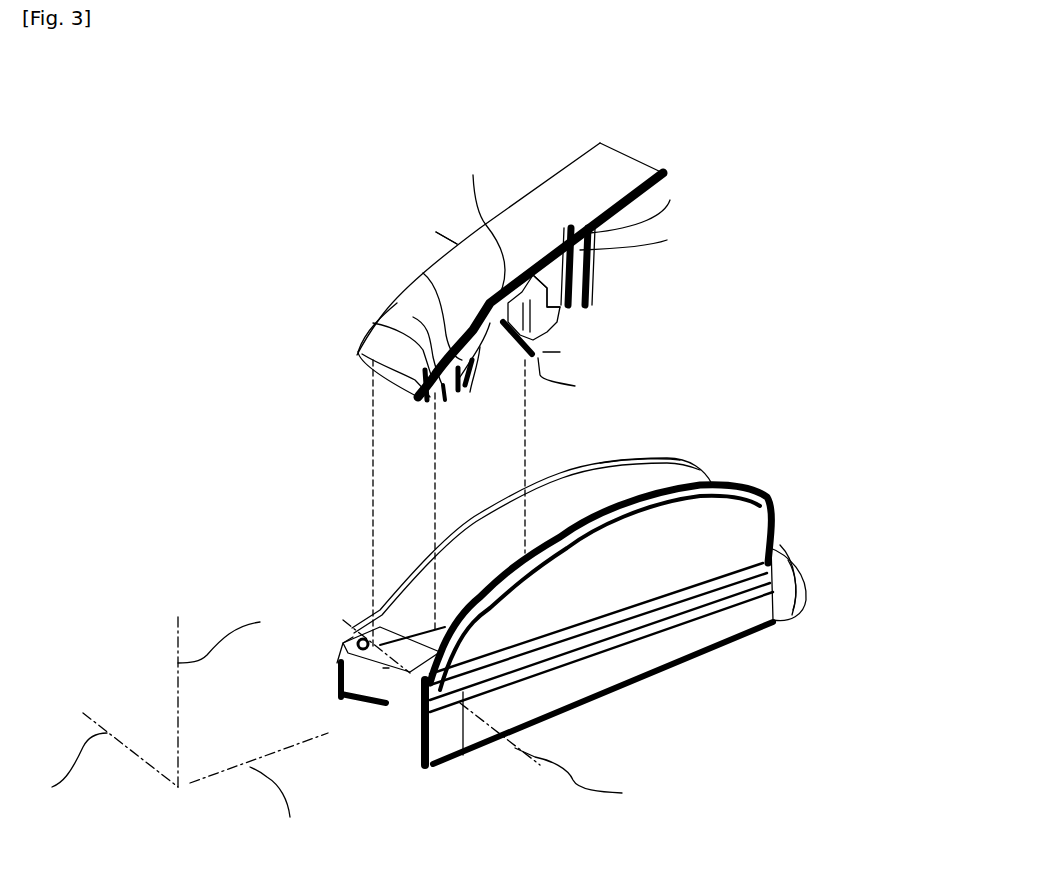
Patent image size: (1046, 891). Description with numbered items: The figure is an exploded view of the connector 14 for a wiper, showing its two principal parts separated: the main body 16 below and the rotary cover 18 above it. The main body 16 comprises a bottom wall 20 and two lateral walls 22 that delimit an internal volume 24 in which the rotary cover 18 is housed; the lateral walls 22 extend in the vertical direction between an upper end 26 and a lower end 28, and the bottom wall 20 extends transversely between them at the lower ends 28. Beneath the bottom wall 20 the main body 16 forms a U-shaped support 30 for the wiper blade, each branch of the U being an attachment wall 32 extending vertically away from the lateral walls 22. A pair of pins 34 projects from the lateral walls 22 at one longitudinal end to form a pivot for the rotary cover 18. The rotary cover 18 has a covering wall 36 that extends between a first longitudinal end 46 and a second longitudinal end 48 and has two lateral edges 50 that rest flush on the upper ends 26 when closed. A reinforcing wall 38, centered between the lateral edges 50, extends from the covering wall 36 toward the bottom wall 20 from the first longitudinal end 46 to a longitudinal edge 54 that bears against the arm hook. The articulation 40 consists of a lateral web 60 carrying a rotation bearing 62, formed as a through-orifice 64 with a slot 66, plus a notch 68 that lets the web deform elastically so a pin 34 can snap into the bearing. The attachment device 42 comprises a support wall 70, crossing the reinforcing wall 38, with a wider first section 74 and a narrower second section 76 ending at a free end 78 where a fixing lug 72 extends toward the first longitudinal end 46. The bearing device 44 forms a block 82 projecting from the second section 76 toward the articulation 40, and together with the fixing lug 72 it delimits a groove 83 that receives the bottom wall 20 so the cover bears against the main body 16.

The connector 14 is at (158, 386).
The main body 16 is at (750, 608).
The rotary cover 18 is at (571, 166).
The bottom wall 20 is at (388, 668).
The lateral walls 22 is at (675, 523).
The internal volume 24 is at (548, 505).
The upper end 26 is at (745, 487).
The lower end 28 is at (772, 600).
The support 30 is at (383, 668).
The attachment wall 32 is at (345, 650).
The pair of pins 34 is at (390, 657).
The covering wall 36 is at (477, 243).
The reinforcing wall 38 is at (667, 240).
The articulation 40 is at (250, 231).
The attachment device 42 is at (792, 290).
The bearing device 44 is at (450, 240).
The first longitudinal end 46 is at (385, 378).
The second longitudinal end 48 is at (623, 150).
The lateral edges 50 is at (510, 193).
The longitudinal edge 54 is at (670, 200).
The lateral web 60 is at (423, 273).
The rotation bearing 62 is at (310, 303).
The through-orifice 64 is at (373, 323).
The slot 66 is at (362, 354).
The notch 68 is at (413, 317).
The support wall 70 is at (720, 277).
The fixing lug 72 is at (560, 352).
The first section 74 is at (557, 277).
The second section 76 is at (533, 310).
The free end 78 is at (575, 386).
The block 82 is at (450, 240).
The groove 83 is at (540, 347).